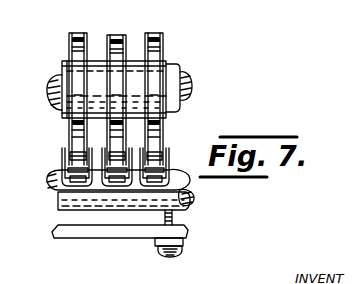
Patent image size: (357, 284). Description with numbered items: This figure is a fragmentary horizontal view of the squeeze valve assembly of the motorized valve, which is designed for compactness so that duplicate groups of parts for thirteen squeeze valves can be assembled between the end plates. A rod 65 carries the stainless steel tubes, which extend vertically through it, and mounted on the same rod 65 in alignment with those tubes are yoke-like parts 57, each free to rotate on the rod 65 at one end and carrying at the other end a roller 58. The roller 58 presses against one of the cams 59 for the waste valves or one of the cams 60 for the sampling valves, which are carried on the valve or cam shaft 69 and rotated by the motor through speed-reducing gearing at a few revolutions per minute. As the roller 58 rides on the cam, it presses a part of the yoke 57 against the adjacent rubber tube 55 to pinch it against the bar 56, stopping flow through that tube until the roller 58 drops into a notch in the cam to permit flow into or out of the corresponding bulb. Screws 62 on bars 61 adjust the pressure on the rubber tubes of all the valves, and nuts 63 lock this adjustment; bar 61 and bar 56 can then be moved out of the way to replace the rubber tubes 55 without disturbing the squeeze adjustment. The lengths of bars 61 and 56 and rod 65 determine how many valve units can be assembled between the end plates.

The rubber tube 55 is at (110, 186).
The bar 56 is at (76, 212).
The yoke-like part 57 is at (62, 170).
The roller 58 is at (78, 155).
The cam 59 is at (115, 70).
The cam 60 is at (143, 33).
The bar 61 is at (118, 230).
The screw 62 is at (177, 252).
The nut 63 is at (183, 240).
The rod 65 is at (195, 197).
The valve shaft 69 is at (182, 72).